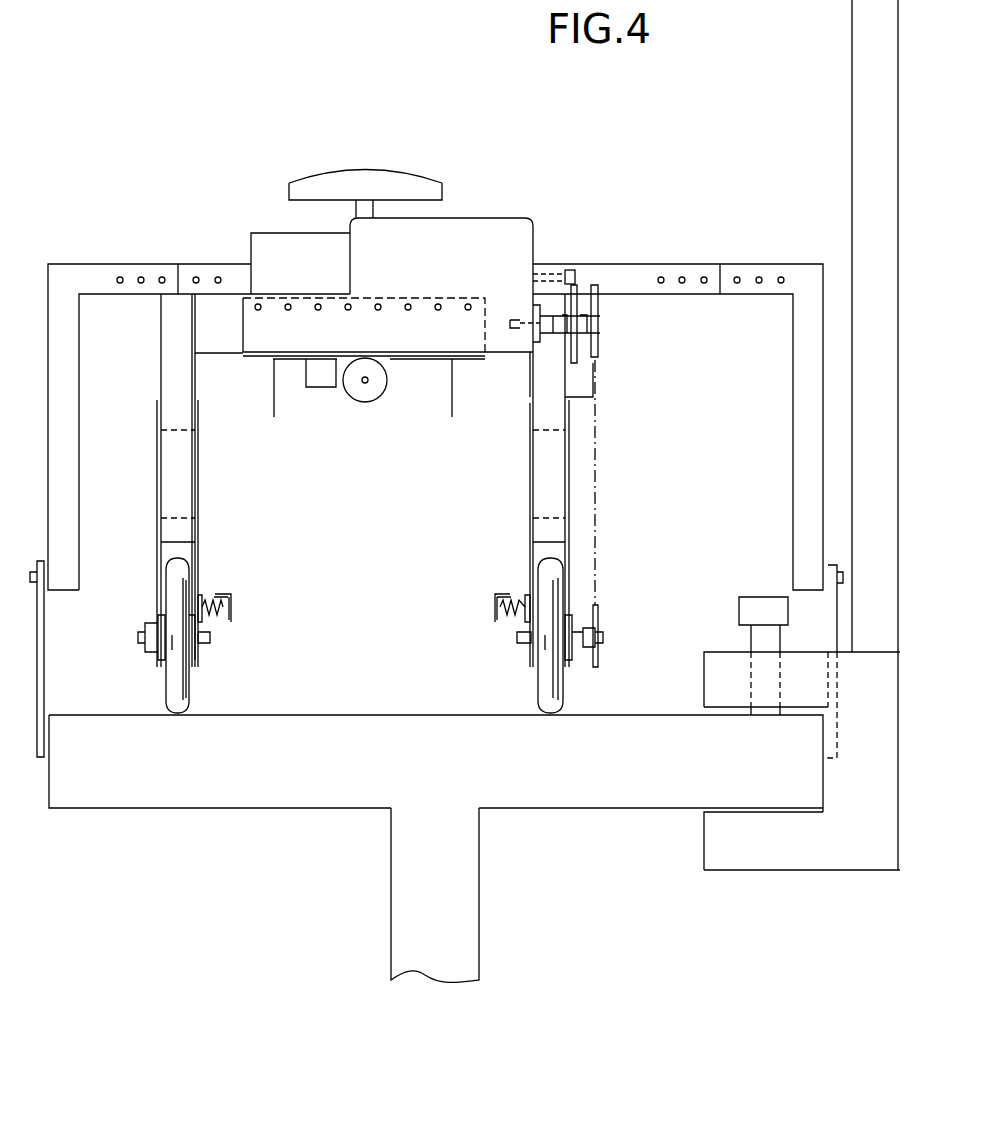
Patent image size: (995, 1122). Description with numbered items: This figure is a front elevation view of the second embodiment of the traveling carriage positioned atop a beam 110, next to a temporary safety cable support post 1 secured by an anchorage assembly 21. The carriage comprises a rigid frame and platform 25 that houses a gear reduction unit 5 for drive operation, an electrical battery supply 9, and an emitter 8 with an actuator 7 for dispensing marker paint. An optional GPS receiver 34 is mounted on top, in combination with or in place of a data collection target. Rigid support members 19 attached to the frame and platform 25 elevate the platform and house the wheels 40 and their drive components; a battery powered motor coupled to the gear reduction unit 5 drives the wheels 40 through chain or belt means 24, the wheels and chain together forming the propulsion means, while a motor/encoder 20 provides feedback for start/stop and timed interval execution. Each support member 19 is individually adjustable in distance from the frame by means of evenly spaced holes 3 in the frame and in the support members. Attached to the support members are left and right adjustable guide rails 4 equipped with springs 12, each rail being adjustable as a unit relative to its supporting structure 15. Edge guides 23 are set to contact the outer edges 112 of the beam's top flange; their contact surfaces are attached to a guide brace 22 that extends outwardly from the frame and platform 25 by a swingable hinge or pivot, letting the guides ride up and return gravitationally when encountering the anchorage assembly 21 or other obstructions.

The temporary safety cable support post 1 is at (852, 135).
The evenly spaced holes 3 is at (285, 306).
The adjustable guide rails 4 is at (231, 595).
The gear reduction unit 5 is at (520, 218).
The actuator 7 is at (312, 388).
The emitter 8 is at (368, 382).
The electrical battery supply 9 is at (265, 233).
The springs 12 is at (204, 603).
The supporting structure 15 is at (203, 618).
The rigid support members 19 is at (161, 386).
The motor/encoder 20 is at (158, 620).
The anchorage assembly 21 is at (780, 870).
The guide brace 22 is at (105, 264).
The edge guides 23 is at (44, 690).
The chain or belt means 24 is at (597, 425).
The frame and platform 25 is at (452, 382).
The GPS receiver 34 is at (370, 176).
The wheels 40 is at (175, 695).
The beam 110 is at (462, 887).
The outer edges 112 is at (49, 780).